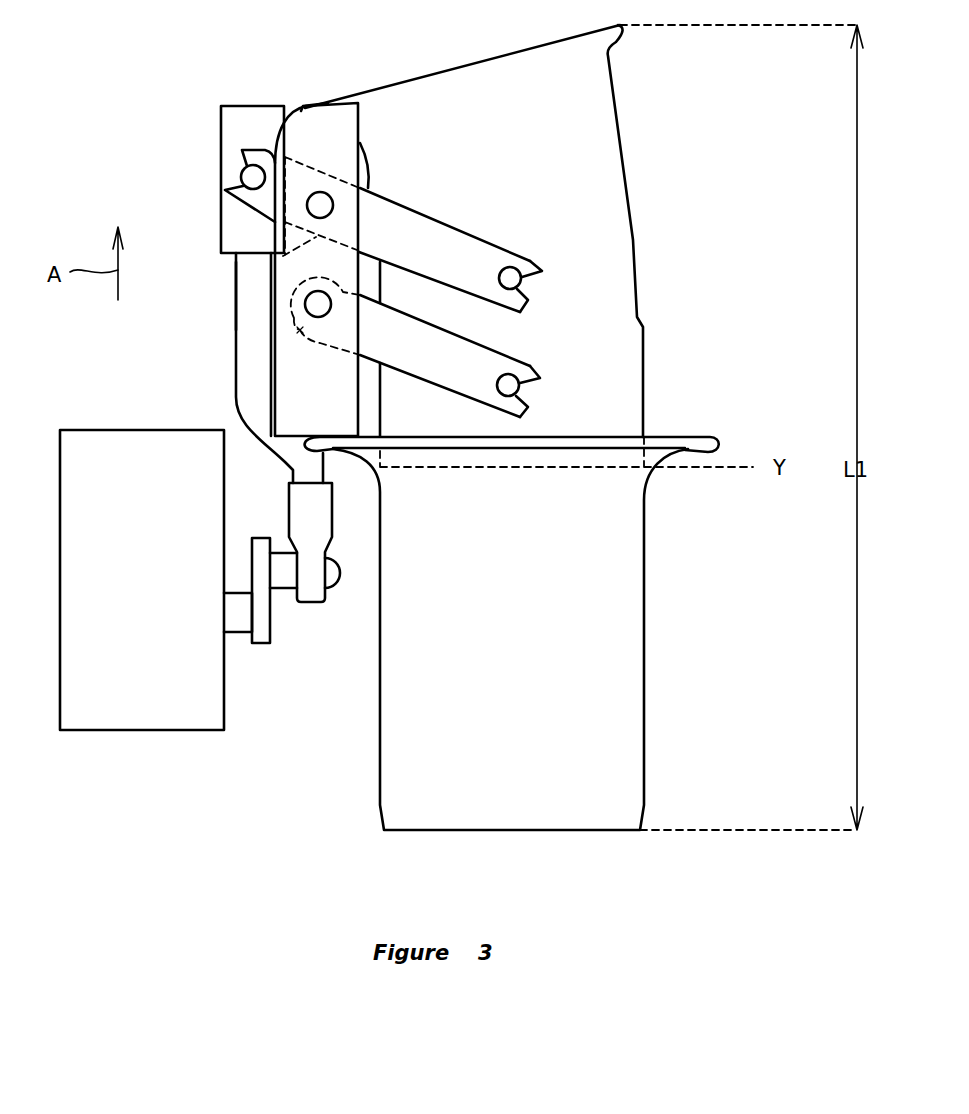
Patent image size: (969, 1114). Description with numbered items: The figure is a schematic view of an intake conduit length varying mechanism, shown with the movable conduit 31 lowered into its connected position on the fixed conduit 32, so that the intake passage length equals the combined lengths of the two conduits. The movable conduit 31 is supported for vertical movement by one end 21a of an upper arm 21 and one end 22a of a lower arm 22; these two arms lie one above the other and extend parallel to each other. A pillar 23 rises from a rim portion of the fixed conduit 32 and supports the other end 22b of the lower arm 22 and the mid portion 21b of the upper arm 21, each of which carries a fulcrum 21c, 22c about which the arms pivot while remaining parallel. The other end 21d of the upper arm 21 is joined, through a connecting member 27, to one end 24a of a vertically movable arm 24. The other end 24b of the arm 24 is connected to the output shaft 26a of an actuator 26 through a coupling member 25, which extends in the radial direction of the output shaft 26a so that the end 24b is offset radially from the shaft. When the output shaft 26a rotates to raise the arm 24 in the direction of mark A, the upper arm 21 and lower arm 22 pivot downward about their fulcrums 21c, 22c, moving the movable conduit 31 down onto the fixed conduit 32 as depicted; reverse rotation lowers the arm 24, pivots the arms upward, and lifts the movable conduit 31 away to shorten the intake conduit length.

The upper arm 21 is at (402, 215).
The one end of the upper arm 21a is at (528, 262).
The mid portion of the upper arm 21b is at (283, 255).
The fulcrum 21c is at (320, 205).
The other end of the upper arm 21d is at (250, 157).
The lower arm 22 is at (447, 352).
The one end of the lower arm 22a is at (528, 372).
The other end of the lower arm 22b is at (283, 347).
The fulcrum 22c is at (318, 305).
The pillar 23 is at (335, 127).
The arm 24 is at (243, 383).
The one end of the arm 24a is at (236, 285).
The other end of the arm 24b is at (310, 600).
The coupling member 25 is at (260, 635).
The actuator 26 is at (105, 447).
The output shaft 26a is at (240, 625).
The connecting member 27 is at (227, 136).
The movable conduit 31 is at (600, 105).
The fixed conduit 32 is at (613, 605).